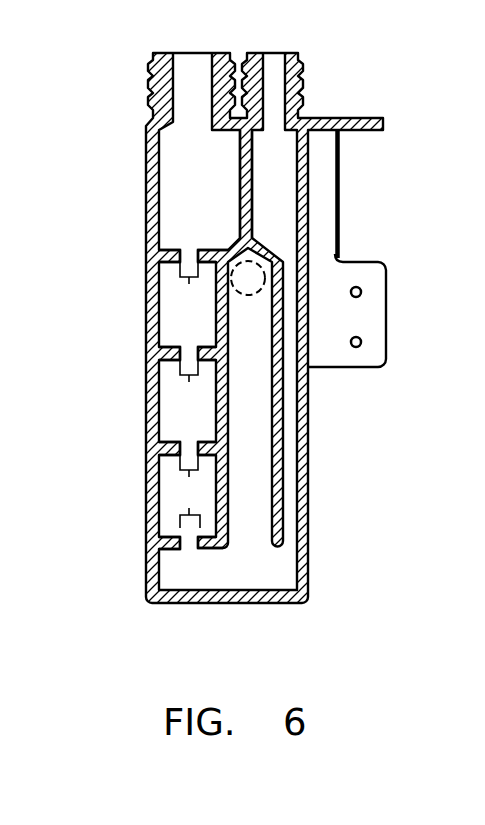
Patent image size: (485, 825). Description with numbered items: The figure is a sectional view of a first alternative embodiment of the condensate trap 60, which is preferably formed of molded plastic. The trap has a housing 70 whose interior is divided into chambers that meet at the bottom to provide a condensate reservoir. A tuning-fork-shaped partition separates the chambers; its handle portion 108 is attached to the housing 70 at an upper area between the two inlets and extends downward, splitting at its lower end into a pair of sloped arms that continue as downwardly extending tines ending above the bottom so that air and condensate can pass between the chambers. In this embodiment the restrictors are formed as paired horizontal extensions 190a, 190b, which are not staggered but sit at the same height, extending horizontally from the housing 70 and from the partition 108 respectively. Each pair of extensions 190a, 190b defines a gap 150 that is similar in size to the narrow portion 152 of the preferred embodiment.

The condensate trap 60 is at (392, 72).
The housing 70 is at (143, 157).
The handle portion 108 is at (252, 193).
The gap 150 is at (190, 395).
The narrow portion 152 is at (307, 398).
The horizontal extension 190a is at (158, 270).
The horizontal extension 190b is at (202, 248).